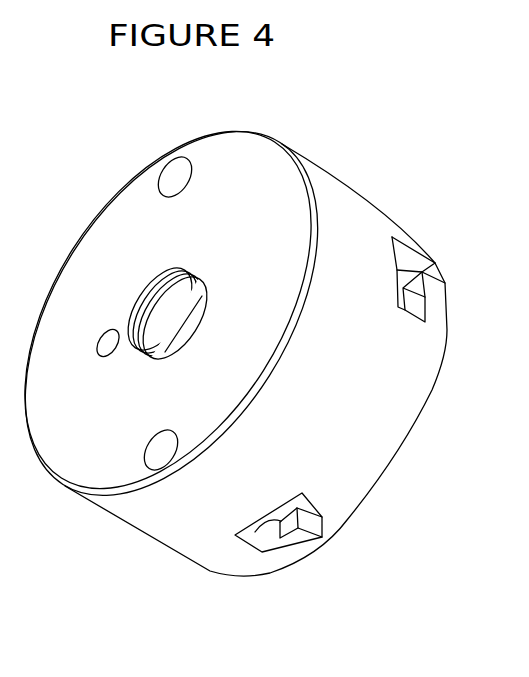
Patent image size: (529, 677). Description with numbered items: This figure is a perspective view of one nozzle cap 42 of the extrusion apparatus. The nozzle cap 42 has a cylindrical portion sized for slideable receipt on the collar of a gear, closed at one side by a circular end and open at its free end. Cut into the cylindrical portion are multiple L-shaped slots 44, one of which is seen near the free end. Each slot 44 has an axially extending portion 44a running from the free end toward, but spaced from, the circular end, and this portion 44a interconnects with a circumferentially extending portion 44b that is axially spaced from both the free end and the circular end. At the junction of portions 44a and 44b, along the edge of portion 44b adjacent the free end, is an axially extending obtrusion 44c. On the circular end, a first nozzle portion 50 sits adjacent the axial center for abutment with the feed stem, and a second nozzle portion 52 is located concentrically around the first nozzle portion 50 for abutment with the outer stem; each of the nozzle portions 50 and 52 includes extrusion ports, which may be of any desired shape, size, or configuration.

The nozzle cap 42 is at (390, 432).
The L-shaped slot 44 is at (273, 501).
The axially extending portion 44a is at (318, 513).
The circumferentially extending portion 44b is at (270, 520).
The axially extending obtrusion 44c is at (290, 542).
The first nozzle portion 50 is at (185, 264).
The second nozzle portion 52 is at (279, 187).